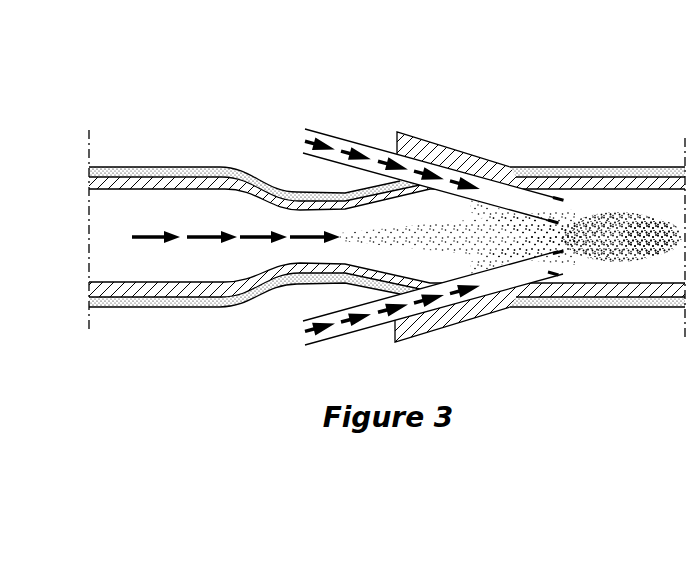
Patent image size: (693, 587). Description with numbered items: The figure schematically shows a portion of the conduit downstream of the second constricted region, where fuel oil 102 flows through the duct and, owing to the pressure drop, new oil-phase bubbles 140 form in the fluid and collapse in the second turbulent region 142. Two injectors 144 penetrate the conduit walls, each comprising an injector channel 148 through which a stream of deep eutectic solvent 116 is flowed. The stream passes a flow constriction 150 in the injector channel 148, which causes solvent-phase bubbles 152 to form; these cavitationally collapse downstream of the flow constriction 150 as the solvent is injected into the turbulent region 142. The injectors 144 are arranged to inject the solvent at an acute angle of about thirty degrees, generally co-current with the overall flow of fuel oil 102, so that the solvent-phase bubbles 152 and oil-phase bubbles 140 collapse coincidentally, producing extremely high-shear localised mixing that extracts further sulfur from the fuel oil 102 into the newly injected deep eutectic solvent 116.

The fuel oil 102 is at (142, 236).
The deep eutectic solvent 116 is at (142, 236).
The injector channel 148 is at (330, 136).
The injector 144 is at (378, 148).
The flow constriction 150 is at (470, 180).
The bubbles 140 is at (528, 226).
The solvent-phase bubbles 152 is at (579, 216).
The second turbulent region 142 is at (647, 232).